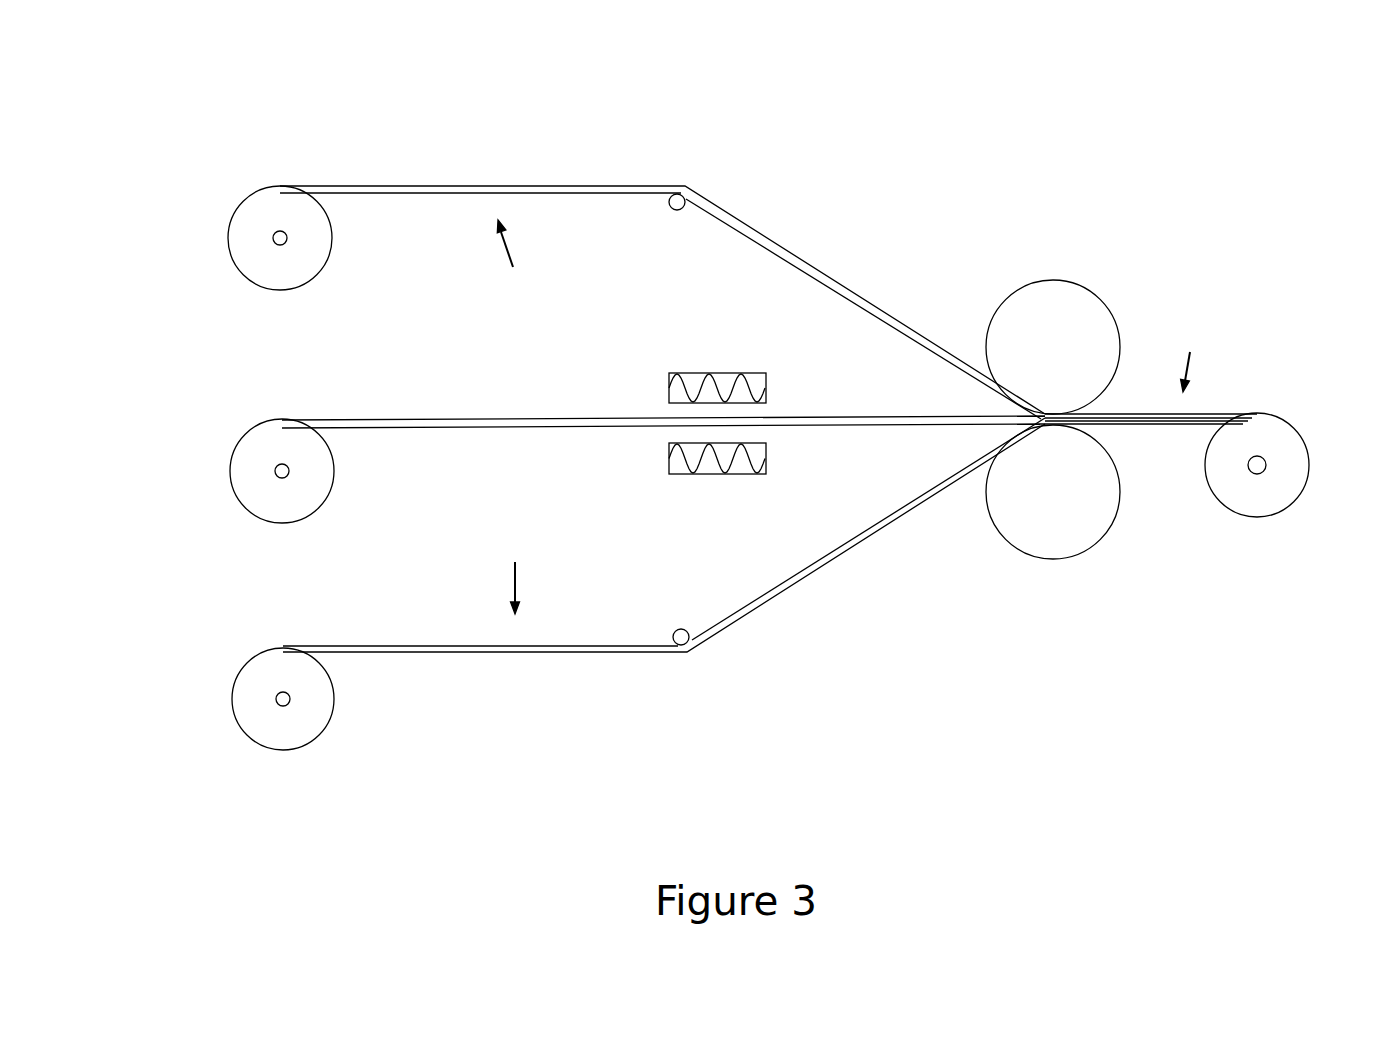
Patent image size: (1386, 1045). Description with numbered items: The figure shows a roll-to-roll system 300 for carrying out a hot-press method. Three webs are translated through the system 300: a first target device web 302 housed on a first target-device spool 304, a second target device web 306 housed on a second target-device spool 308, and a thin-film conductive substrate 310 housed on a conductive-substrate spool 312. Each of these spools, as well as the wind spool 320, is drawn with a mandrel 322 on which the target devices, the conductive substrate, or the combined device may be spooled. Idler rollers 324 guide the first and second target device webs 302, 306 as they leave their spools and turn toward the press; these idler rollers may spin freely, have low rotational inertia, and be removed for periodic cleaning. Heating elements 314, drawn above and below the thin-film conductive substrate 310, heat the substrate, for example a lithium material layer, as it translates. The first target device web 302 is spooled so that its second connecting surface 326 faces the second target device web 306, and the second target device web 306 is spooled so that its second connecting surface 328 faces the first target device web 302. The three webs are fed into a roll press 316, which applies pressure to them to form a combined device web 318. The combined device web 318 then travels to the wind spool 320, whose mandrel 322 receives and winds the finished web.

The roll-to-roll system 300 is at (1180, 78).
The first target device web 302 is at (481, 186).
The first target-device spool 304 is at (238, 205).
The second target device web 306 is at (437, 647).
The second target-device spool 308 is at (233, 700).
The thin-film conductive substrate 310 is at (522, 419).
The conductive-substrate spool 312 is at (246, 430).
The heating element 314 is at (717, 373).
The roll press 316 is at (1097, 297).
The combined device web 318 is at (1197, 360).
The wind spool 320 is at (1287, 423).
The mandrel 322 is at (280, 238).
The idler roller 324 is at (668, 205).
The second connecting surface of first target device web 326 is at (519, 257).
The second connecting surface of second target device web 328 is at (519, 576).